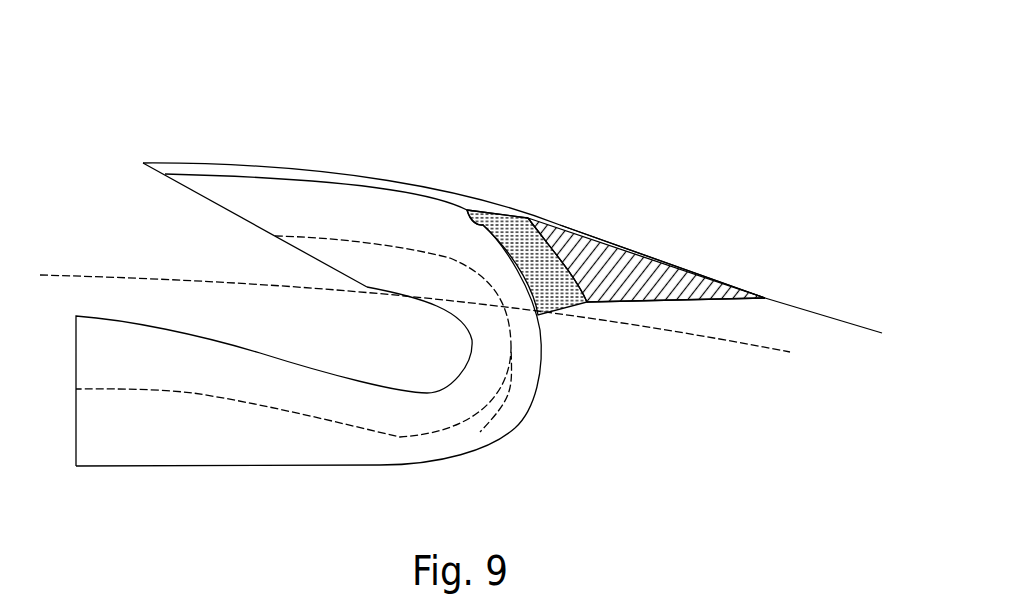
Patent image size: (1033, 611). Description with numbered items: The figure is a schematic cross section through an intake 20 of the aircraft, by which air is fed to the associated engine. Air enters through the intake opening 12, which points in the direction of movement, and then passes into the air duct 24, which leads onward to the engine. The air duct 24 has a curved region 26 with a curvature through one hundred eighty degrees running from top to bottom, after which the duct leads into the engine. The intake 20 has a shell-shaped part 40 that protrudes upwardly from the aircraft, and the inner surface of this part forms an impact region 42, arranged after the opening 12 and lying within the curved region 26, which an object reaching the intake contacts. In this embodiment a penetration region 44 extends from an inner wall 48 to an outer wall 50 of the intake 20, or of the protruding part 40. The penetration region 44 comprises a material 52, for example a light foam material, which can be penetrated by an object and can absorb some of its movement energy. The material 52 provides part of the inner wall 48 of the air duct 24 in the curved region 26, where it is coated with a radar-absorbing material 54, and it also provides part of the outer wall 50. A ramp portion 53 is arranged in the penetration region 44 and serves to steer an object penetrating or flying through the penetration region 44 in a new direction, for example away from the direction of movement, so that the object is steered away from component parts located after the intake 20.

The intake opening 12 is at (255, 227).
The intake 20 is at (598, 83).
The air duct 24 is at (318, 442).
The curved region 26 is at (518, 398).
The shell-shaped part 40 is at (395, 178).
The impact region 42 is at (472, 208).
The penetration region 44 is at (661, 125).
The inner wall 48 is at (531, 361).
The outer wall 50 is at (738, 294).
The penetrable material 52 is at (617, 289).
The ramp portion 53 is at (663, 300).
The radar-absorbing material 54 is at (522, 252).